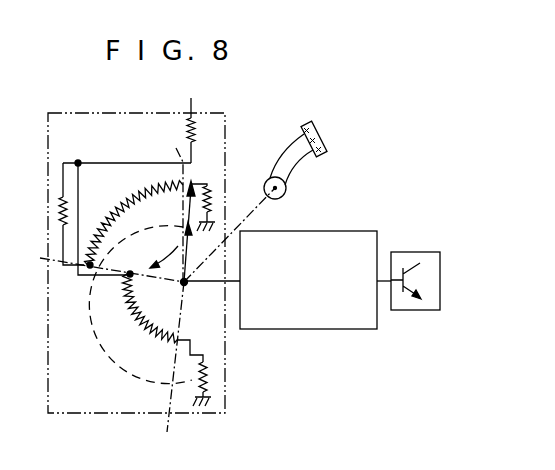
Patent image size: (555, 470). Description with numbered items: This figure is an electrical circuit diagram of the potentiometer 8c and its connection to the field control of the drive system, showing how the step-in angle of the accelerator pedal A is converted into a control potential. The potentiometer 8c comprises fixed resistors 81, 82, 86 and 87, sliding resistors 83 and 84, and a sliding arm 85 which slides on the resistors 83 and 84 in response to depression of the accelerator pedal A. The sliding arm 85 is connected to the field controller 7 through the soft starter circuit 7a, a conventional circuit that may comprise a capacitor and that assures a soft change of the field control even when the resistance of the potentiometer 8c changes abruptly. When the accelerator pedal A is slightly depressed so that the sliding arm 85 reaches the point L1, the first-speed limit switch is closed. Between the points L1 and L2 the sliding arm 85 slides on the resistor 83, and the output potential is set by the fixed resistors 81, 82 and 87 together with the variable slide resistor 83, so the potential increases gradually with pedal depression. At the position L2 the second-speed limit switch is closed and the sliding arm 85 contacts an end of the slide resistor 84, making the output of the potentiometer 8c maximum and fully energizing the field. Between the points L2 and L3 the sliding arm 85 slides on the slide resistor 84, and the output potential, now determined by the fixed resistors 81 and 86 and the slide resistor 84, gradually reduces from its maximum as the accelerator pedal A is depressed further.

The potentiometer 8c is at (106, 112).
The fixed resistor 81 is at (192, 142).
The fixed resistor 82 is at (212, 200).
The sliding resistor 83 is at (112, 207).
The sliding resistor 84 is at (153, 333).
The sliding arm 85 is at (196, 186).
The fixed resistor 86 is at (210, 372).
The fixed resistor 87 is at (60, 203).
The field controller 7 is at (410, 252).
The soft starter circuit 7a is at (325, 231).
The accelerator pedal A is at (326, 149).
The point L1 is at (169, 207).
The point L2 is at (56, 254).
The point L3 is at (170, 430).